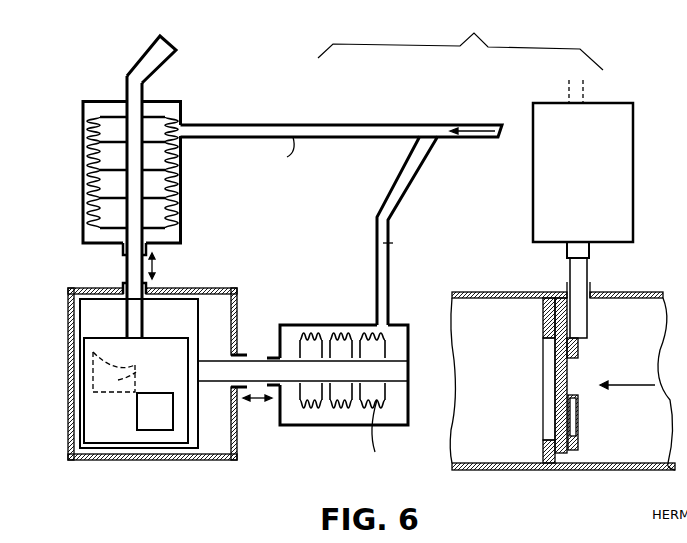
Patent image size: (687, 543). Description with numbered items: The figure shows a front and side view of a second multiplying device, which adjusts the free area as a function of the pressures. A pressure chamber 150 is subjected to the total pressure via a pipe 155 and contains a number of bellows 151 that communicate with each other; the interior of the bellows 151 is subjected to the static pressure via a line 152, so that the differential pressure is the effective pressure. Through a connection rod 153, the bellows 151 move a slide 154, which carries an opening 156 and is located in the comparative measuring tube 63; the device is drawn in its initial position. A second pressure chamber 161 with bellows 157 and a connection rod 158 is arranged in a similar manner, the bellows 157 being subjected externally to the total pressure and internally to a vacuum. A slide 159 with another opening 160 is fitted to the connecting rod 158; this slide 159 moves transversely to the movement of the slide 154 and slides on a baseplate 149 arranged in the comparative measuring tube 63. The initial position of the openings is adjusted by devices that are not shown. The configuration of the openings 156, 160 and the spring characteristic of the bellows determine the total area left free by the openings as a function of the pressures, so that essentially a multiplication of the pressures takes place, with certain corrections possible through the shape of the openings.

The comparative measuring tube 63 is at (201, 300).
The baseplate 149 is at (70, 291).
The pressure chamber 150 is at (182, 108).
The bellows 151 is at (93, 124).
The line 152 is at (165, 45).
The connection rod 153 is at (126, 268).
The slide 154 is at (104, 452).
The pipe 155 is at (325, 124).
The opening 156 is at (160, 418).
The bellows 157 is at (343, 398).
The connection rod 158 is at (253, 370).
The slide 159 is at (201, 312).
The opening 160 is at (141, 373).
The pressure chamber 161 is at (334, 323).